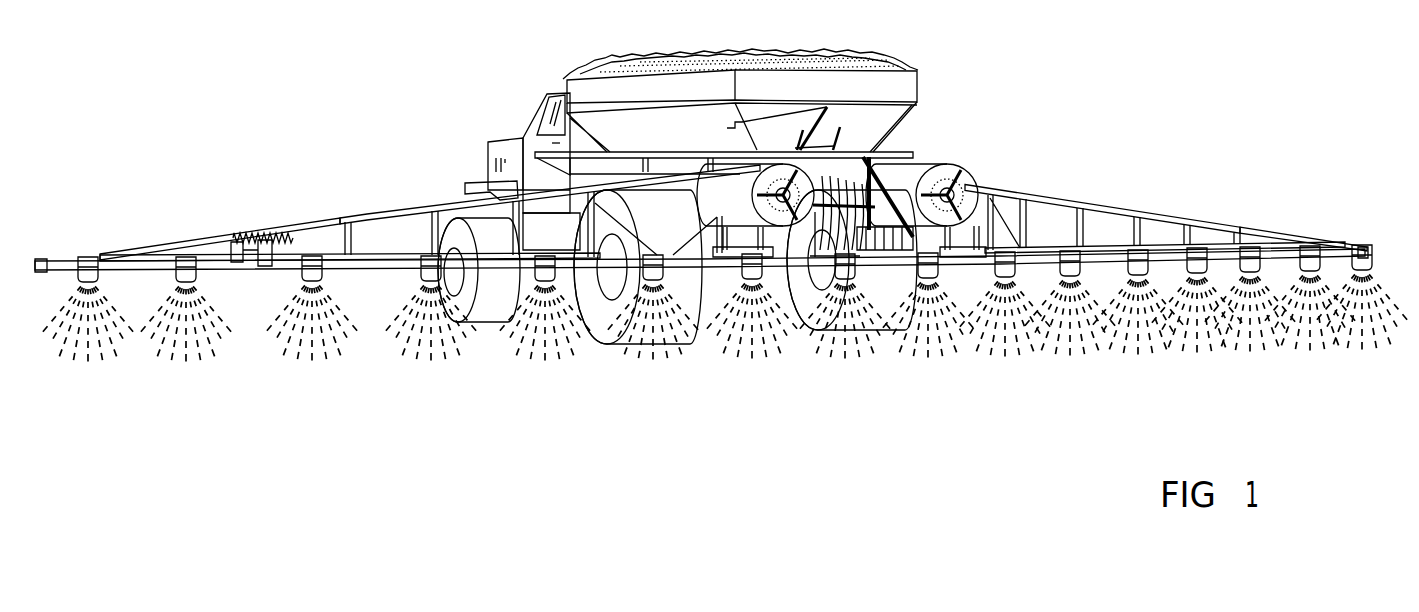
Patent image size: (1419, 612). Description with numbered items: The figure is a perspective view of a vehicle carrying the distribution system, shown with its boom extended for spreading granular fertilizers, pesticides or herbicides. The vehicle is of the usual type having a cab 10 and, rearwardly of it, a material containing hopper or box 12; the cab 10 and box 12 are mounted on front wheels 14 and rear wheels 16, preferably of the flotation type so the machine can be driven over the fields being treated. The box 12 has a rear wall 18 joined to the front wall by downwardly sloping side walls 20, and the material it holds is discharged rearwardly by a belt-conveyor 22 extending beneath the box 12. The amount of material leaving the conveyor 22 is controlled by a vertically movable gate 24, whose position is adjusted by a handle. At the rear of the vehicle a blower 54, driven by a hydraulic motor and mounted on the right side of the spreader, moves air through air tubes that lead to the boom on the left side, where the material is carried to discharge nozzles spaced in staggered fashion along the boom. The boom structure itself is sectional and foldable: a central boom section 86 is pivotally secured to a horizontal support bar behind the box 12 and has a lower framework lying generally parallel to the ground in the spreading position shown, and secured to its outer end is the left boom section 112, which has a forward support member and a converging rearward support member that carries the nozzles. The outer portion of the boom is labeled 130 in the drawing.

The cab 10 is at (509, 141).
The material containing hopper or box 12 is at (905, 82).
The front wheels 14 is at (475, 225).
The rear wheels 16 is at (662, 344).
The rear wall 18 is at (890, 113).
The side walls 20 is at (680, 135).
The belt-conveyor 22 is at (868, 158).
The vertically movable gate 24 is at (845, 150).
The fan or blower 54 is at (970, 182).
The central boom section 86 is at (796, 283).
The left boom section 112 is at (368, 213).
The boom outer section 130 is at (207, 238).